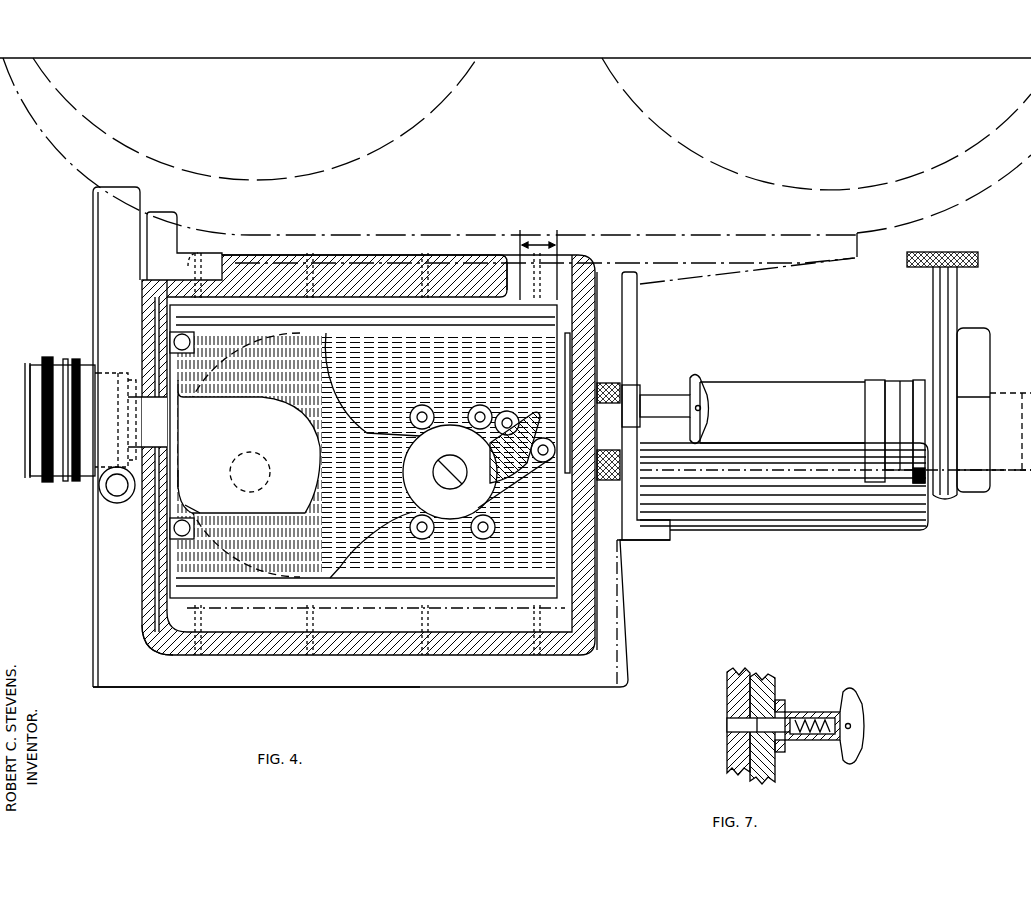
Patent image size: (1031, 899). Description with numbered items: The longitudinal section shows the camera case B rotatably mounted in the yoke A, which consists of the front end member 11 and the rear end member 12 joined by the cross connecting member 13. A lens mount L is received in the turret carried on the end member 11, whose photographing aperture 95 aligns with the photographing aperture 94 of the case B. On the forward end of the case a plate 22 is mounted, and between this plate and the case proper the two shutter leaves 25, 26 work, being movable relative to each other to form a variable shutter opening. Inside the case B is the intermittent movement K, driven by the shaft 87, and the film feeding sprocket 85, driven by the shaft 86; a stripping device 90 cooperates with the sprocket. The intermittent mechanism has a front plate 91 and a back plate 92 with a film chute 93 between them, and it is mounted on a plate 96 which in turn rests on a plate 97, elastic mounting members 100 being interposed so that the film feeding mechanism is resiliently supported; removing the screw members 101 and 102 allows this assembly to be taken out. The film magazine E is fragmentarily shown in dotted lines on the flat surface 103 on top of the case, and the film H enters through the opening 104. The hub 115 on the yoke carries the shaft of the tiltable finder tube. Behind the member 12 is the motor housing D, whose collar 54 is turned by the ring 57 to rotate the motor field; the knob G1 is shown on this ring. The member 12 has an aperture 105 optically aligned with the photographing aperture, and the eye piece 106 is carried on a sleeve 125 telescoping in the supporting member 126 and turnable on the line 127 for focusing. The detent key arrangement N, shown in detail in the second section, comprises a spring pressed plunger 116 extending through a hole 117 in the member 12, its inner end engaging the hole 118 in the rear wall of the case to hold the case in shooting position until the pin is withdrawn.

In FIG. 4, the film magazine E is at (43, 133).
In FIG. 4, the end member 11 is at (125, 186).
In FIG. 4, the plate 22 is at (151, 212).
In FIG. 4, the screw member 101 is at (196, 252).
In FIG. 4, the camera case B is at (227, 255).
In FIG. 4, the flat surface 103 is at (352, 257).
In FIG. 4, the opening 104 is at (507, 296).
In FIG. 4, the film H is at (538, 265).
In FIG. 4, the end member 12 is at (612, 271).
In FIG. 7, the end member 12 is at (772, 683).
In FIG. 4, the knob G1 is at (950, 254).
In FIG. 4, the collar 54 is at (965, 329).
In FIG. 4, the photographing aperture 94 is at (140, 392).
In FIG. 4, the photographing aperture 95 is at (130, 396).
In FIG. 4, the shutter leaf 26 is at (154, 344).
In FIG. 4, the shutter leaf 25 is at (182, 349).
In FIG. 4, the plate 96 is at (249, 455).
In FIG. 4, the elastic mounting members 100 is at (363, 452).
In FIG. 4, the plate 97 is at (438, 455).
In FIG. 4, the supporting member 126 is at (780, 381).
In FIG. 4, the sleeve 125 is at (880, 389).
In FIG. 4, the eye piece 106 is at (916, 384).
In FIG. 4, the line 127 is at (900, 410).
In FIG. 4, the detent key arrangement N is at (651, 399).
In FIG. 7, the detent key arrangement N is at (800, 710).
In FIG. 4, the intermittent movement K is at (205, 428).
In FIG. 4, the film chute 93 is at (183, 478).
In FIG. 4, the shaft 87 is at (266, 485).
In FIG. 4, the back plate 92 is at (192, 505).
In FIG. 4, the front plate 91 is at (181, 522).
In FIG. 4, the hub 115 is at (100, 492).
In FIG. 4, the lens mount L is at (48, 483).
In FIG. 4, the film feeding sprocket 85 is at (450, 472).
In FIG. 4, the shaft 86 is at (448, 472).
In FIG. 4, the stripping device 90 is at (545, 478).
In FIG. 4, the aperture 105 is at (608, 431).
In FIG. 4, the ring 57 is at (946, 499).
In FIG. 4, the motor housing D is at (822, 532).
In FIG. 4, the screw member 102 is at (237, 620).
In FIG. 4, the cross connecting member 13 is at (290, 688).
In FIG. 4, the yoke A is at (418, 687).
In FIG. 7, the hole 118 is at (740, 722).
In FIG. 7, the spring pressed plunger 116 is at (757, 718).
In FIG. 7, the hole 117 is at (760, 745).